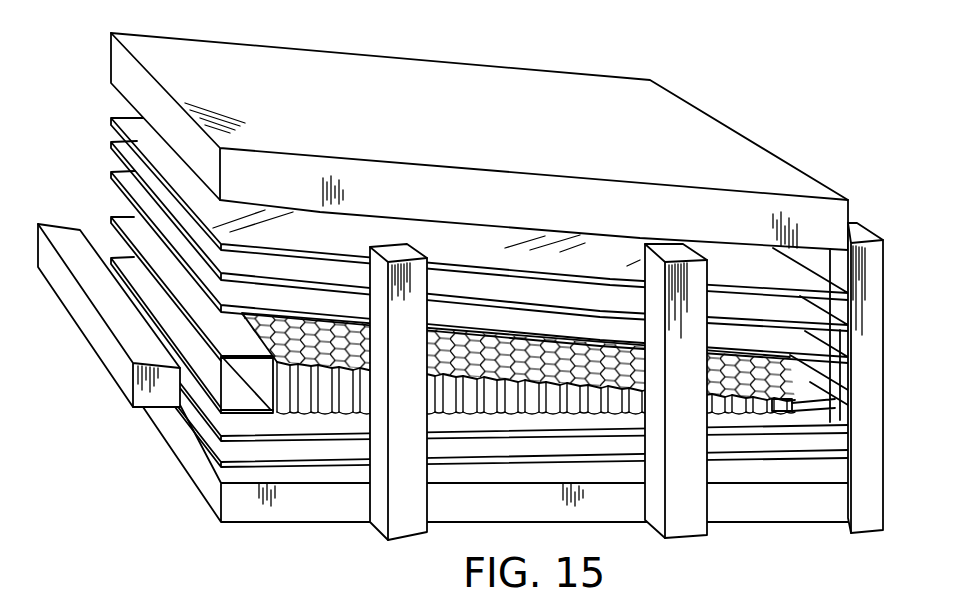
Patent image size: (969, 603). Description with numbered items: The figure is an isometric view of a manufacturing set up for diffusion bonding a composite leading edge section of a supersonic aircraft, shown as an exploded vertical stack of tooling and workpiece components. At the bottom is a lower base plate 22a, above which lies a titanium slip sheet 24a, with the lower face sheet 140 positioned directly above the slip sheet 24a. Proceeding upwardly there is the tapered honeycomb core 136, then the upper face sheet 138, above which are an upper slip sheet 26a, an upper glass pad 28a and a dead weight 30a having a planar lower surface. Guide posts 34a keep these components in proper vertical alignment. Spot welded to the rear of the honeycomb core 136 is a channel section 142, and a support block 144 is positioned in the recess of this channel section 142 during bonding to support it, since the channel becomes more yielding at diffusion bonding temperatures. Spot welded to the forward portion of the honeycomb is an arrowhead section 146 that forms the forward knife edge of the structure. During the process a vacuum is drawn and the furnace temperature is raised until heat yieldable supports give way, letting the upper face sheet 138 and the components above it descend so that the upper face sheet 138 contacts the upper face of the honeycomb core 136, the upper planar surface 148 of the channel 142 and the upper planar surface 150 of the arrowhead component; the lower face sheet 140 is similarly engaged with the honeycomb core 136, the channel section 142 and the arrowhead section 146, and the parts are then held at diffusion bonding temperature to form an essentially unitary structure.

The lower base plate 22a is at (293, 515).
The titanium slip sheet 24a is at (222, 467).
The upper slip sheet 26a is at (452, 292).
The upper glass pad 28a is at (610, 278).
The dead weight 30a is at (498, 73).
The guide posts 34a is at (423, 534).
The honeycomb core 136 is at (495, 413).
The upper face sheet 138 is at (501, 328).
The lower face sheet 140 is at (227, 468).
The channel section 142 is at (220, 395).
The support block 144 is at (113, 358).
The arrowhead section 146 is at (833, 398).
The upper planar surface of the channel 148 is at (132, 218).
The upper planar surface of the arrowhead component 150 is at (795, 392).